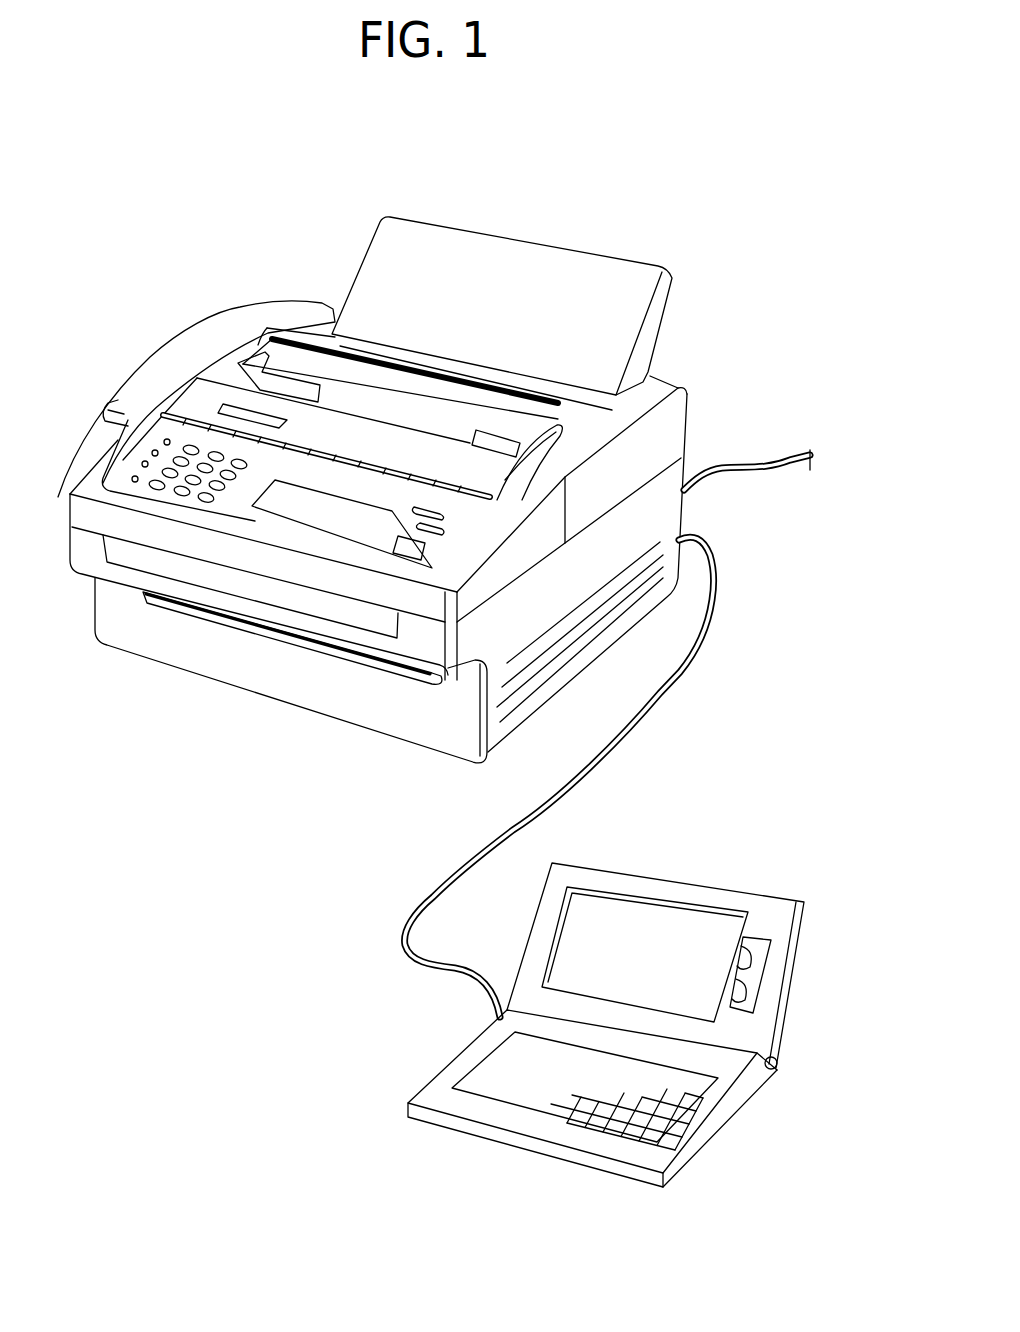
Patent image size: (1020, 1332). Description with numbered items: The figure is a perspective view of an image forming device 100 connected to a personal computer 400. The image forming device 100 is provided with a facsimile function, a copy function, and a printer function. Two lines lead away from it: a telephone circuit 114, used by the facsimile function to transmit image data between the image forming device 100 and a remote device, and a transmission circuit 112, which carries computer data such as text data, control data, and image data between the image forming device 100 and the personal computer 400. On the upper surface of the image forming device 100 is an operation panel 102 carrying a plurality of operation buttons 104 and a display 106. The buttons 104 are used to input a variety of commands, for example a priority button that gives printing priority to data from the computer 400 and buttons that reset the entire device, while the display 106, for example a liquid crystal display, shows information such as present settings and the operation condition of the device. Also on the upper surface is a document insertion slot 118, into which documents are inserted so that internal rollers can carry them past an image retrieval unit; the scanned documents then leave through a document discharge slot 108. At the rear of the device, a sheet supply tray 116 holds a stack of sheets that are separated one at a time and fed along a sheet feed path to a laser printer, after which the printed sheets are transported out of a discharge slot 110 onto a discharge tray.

The image forming device 100 is at (305, 257).
The operation panel 102 is at (128, 465).
The operation buttons 104 is at (155, 477).
The display 106 is at (247, 412).
The document discharge slot 108 is at (230, 577).
The discharge slot 110 is at (332, 648).
The transmission circuit 112 is at (685, 670).
The telephone circuit 114 is at (765, 462).
The sheet supply tray 116 is at (658, 308).
The document insertion slot 118 is at (388, 425).
The personal computer 400 is at (768, 875).